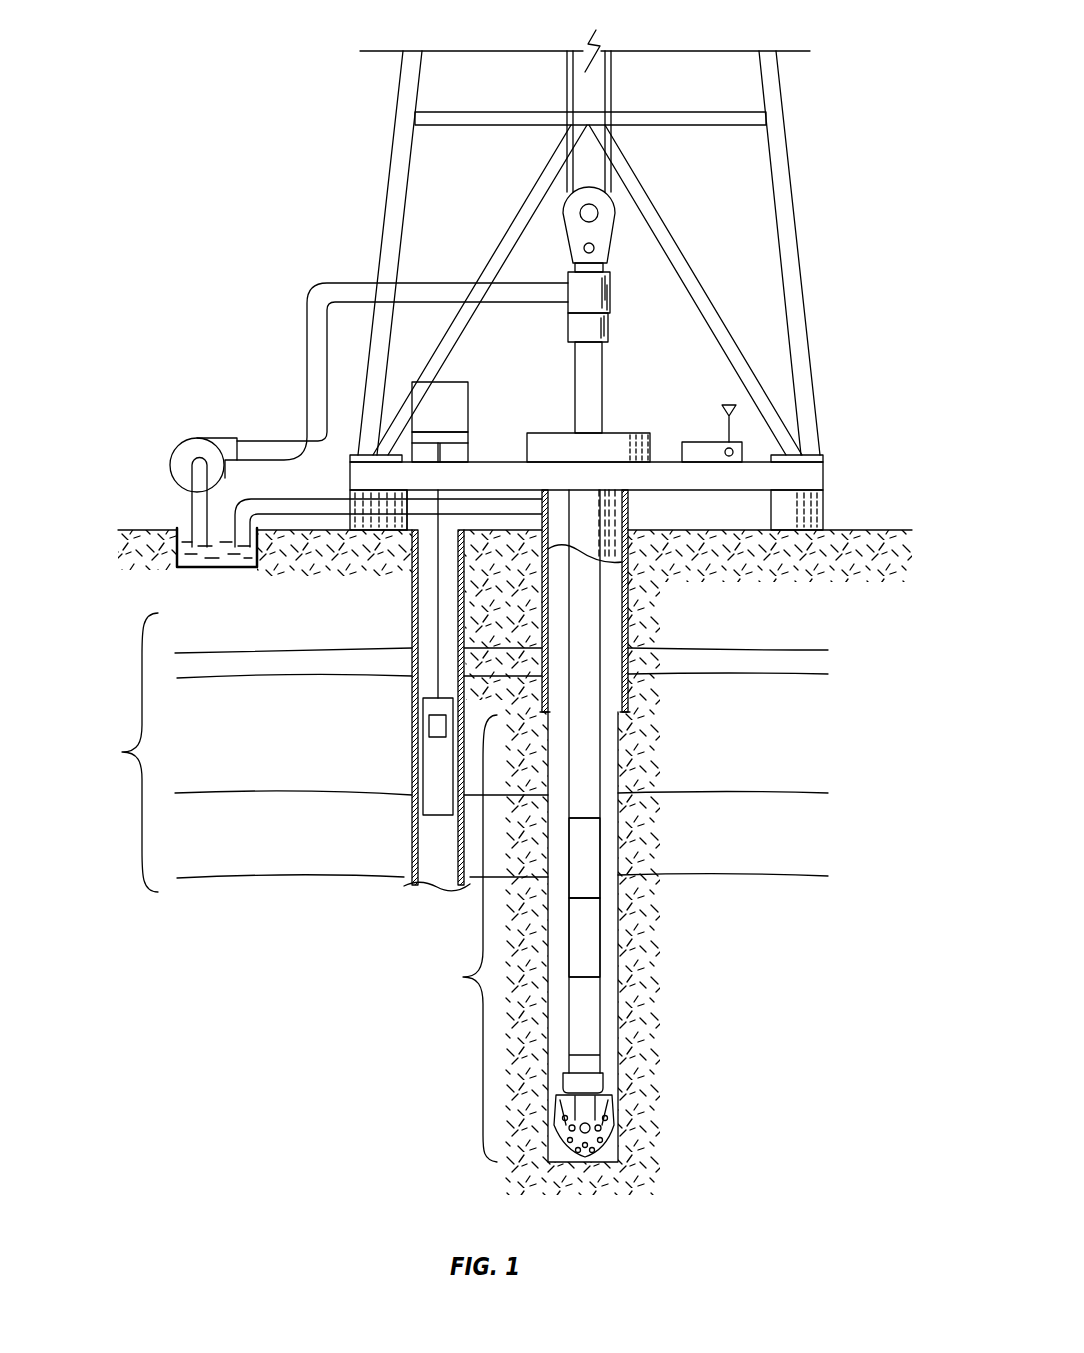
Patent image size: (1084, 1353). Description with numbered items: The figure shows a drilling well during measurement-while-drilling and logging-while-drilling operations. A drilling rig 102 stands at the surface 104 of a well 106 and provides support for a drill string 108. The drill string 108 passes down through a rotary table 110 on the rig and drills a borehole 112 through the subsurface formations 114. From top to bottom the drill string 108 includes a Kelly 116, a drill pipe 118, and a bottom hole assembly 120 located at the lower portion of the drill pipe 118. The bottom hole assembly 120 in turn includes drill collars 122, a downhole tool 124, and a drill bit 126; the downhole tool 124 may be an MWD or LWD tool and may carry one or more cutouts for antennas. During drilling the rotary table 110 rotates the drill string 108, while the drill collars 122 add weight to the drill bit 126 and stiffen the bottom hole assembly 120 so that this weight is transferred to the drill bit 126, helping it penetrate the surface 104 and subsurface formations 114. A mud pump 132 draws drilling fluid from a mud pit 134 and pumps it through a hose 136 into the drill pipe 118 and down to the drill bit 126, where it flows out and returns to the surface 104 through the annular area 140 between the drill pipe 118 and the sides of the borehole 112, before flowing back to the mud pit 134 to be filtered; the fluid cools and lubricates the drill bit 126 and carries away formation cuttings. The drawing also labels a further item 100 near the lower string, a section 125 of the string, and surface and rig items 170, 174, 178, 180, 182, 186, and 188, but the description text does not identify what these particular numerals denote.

The downhole sensor tool 100 is at (432, 728).
The drilling rig 102 is at (800, 200).
The surface 104 is at (850, 530).
The well 106 is at (640, 522).
The drill string 108 is at (607, 605).
The rotary table 110 is at (543, 432).
The borehole 112 is at (414, 645).
The subsurface formations 114 is at (454, 752).
The Kelly 116 is at (602, 367).
The drill pipe 118 is at (591, 743).
The bottom hole assembly 120 is at (461, 938).
The drill collars 122 is at (628, 706).
The downhole tool 124 is at (586, 829).
The measurement tool 125 is at (588, 940).
The drill bit 126 is at (602, 1118).
The mud pump 132 is at (198, 437).
The mud pit 134 is at (238, 168).
The hose 136 is at (306, 347).
The annular area 140 is at (614, 760).
The logging tool 170 is at (424, 755).
The wireline cable 174 is at (437, 620).
The surface control unit 178 is at (703, 442).
The antenna 182 is at (733, 452).
The rig platform 186 is at (825, 476).
The derrick 188 is at (784, 145).
The logging unit 180 is at (455, 382).